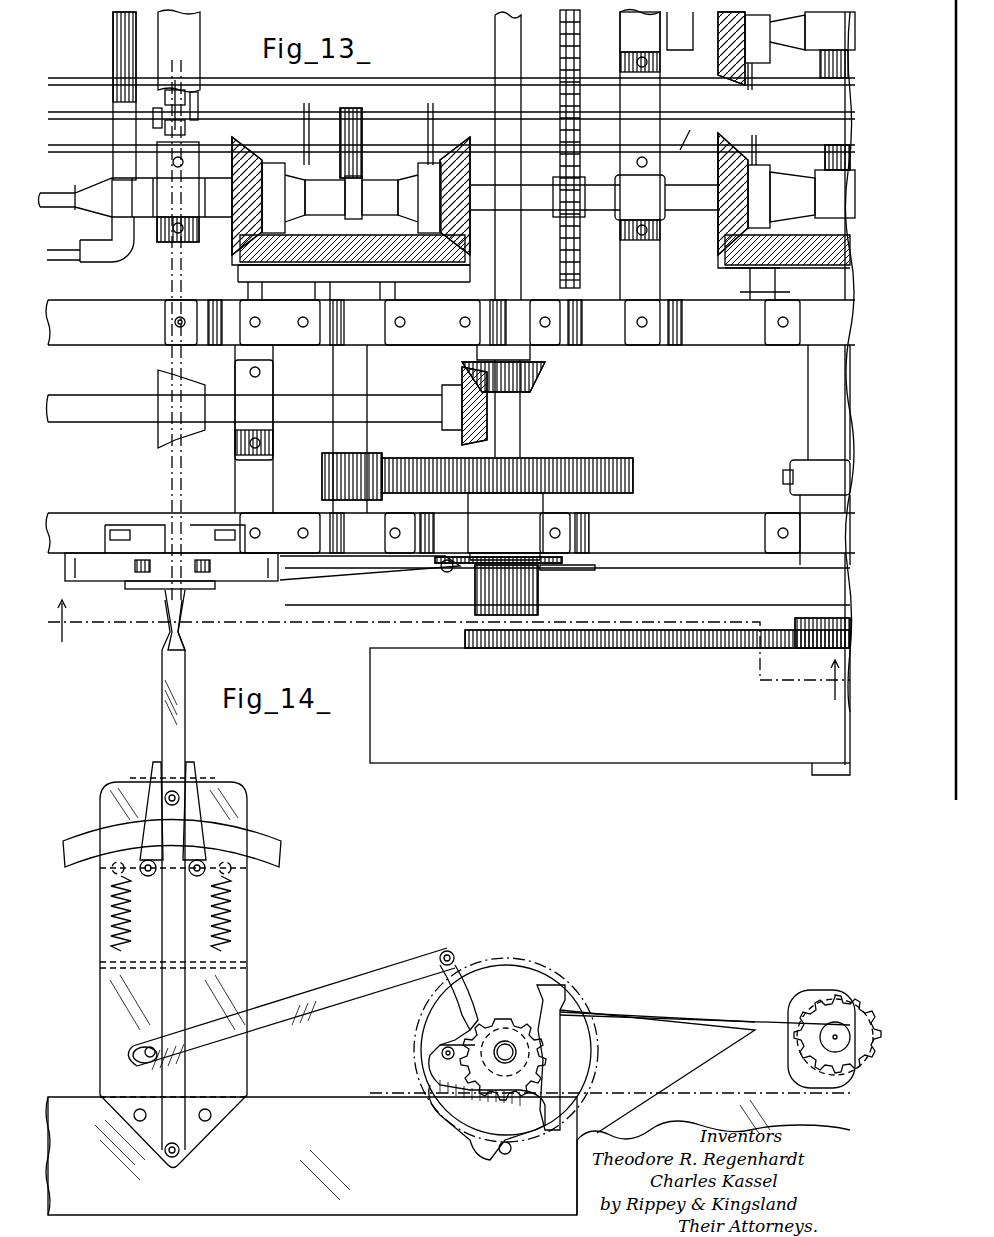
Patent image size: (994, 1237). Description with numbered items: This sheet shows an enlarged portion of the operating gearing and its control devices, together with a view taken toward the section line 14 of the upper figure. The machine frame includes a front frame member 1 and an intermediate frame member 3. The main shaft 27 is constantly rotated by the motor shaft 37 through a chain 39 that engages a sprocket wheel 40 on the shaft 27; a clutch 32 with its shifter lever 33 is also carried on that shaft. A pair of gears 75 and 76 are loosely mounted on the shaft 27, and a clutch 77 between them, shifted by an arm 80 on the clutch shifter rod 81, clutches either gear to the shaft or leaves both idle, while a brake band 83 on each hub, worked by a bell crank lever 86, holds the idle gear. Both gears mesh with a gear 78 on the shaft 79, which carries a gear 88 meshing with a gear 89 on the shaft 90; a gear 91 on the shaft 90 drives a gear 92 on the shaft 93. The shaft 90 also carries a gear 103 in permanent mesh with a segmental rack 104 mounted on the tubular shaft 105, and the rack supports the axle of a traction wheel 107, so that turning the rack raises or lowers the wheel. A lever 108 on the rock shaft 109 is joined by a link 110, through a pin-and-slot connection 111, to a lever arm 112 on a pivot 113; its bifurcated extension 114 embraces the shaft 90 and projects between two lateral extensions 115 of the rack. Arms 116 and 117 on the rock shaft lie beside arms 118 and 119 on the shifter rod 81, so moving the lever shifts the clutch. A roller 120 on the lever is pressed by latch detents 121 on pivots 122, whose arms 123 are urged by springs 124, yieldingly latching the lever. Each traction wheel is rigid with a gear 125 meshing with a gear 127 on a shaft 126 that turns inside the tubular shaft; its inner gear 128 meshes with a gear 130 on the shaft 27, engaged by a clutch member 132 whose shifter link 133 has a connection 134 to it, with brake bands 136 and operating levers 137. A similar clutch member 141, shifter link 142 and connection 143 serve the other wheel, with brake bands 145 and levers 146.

In FIG. 13, the front frame member 1 is at (725, 485).
In FIG. 14, the front frame member 1 is at (320, 1078).
In FIG. 13, the intermediate frame member 3 is at (720, 330).
In FIG. 13, the section line 14 is at (449, 660).
In FIG. 13, the shaft 27 is at (598, 205).
In FIG. 13, the clutch 32 is at (105, 185).
In FIG. 13, the shifter lever 33 is at (120, 35).
In FIG. 13, the motor shaft 37 is at (62, 262).
In FIG. 13, the chain 39 is at (582, 45).
In FIG. 13, the sprocket wheel 40 is at (580, 276).
In FIG. 13, the gear 75 is at (245, 140).
In FIG. 13, the gear 76 is at (460, 135).
In FIG. 13, the clutch 77 is at (372, 175).
In FIG. 13, the gear 78 is at (440, 268).
In FIG. 13, the shaft 79 is at (365, 370).
In FIG. 13, the arm 80 is at (378, 175).
In FIG. 13, the clutch shifter rod 81 is at (398, 108).
In FIG. 13, the brake band 83 is at (275, 165).
In FIG. 13, the bell crank lever 86 is at (300, 103).
In FIG. 13, the gear 88 is at (325, 476).
In FIG. 13, the gear 89 is at (635, 475).
In FIG. 14, the gear 89 is at (520, 960).
In FIG. 13, the shaft 90 is at (520, 272).
In FIG. 14, the shaft 90 is at (502, 1055).
In FIG. 13, the gear 91 is at (540, 385).
In FIG. 13, the gear 92 is at (468, 400).
In FIG. 13, the shaft 93 is at (398, 415).
In FIG. 13, the gear 103 is at (475, 595).
In FIG. 14, the gear 103 is at (503, 1035).
In FIG. 13, the segmental rack 104 is at (660, 585).
In FIG. 14, the segmental rack 104 is at (668, 1003).
In FIG. 13, the tubular shaft 105 is at (810, 398).
In FIG. 13, the traction wheel 107 is at (450, 755).
In FIG. 13, the lever 108 is at (178, 585).
In FIG. 14, the lever 108 is at (175, 740).
In FIG. 13, the rock shaft 109 is at (178, 465).
In FIG. 14, the rock shaft 109 is at (170, 1157).
In FIG. 13, the link 110 is at (335, 583).
In FIG. 14, the link 110 is at (330, 978).
In FIG. 13, the pin-and-slot connection 111 is at (160, 590).
In FIG. 14, the pin-and-slot connection 111 is at (145, 1063).
In FIG. 13, the lever arm 112 is at (440, 570).
In FIG. 14, the lever arm 112 is at (465, 985).
In FIG. 14, the pivot 113 is at (442, 1053).
In FIG. 13, the bifurcated extension 114 is at (540, 558).
In FIG. 14, the bifurcated extension 114 is at (510, 1098).
In FIG. 13, the lateral extension 115 is at (585, 570).
In FIG. 14, the lateral extension 115 is at (560, 985).
In FIG. 13, the arm 116 is at (165, 97).
In FIG. 13, the arm 117 is at (187, 130).
In FIG. 13, the arm 118 is at (200, 100).
In FIG. 13, the arm 119 is at (153, 125).
In FIG. 13, the roller 120 is at (170, 585).
In FIG. 14, the roller 120 is at (255, 775).
In FIG. 13, the latch detent 121 is at (135, 570).
In FIG. 14, the latch detent 121 is at (152, 785).
In FIG. 14, the pivot 122 is at (165, 875).
In FIG. 14, the arm 123 is at (130, 845).
In FIG. 14, the spring 124 is at (112, 925).
In FIG. 13, the gear 125 is at (645, 648).
In FIG. 14, the shaft 126 is at (830, 1032).
In FIG. 13, the gear 127 is at (835, 595).
In FIG. 14, the gear 127 is at (805, 1015).
In FIG. 13, the gear 128 is at (735, 265).
In FIG. 13, the gear 130 is at (740, 118).
In FIG. 13, the clutch member 132 is at (822, 170).
In FIG. 13, the shifter link 133 is at (688, 133).
In FIG. 13, the connection 134 is at (838, 143).
In FIG. 13, the brake band 136 is at (790, 172).
In FIG. 13, the brake band operating lever 137 is at (755, 165).
In FIG. 13, the clutch member 141 is at (815, 38).
In FIG. 13, the shifter link 142 is at (700, 80).
In FIG. 13, the connection 143 is at (832, 70).
In FIG. 13, the brake band 145 is at (760, 70).
In FIG. 13, the brake band operating lever 146 is at (750, 134).